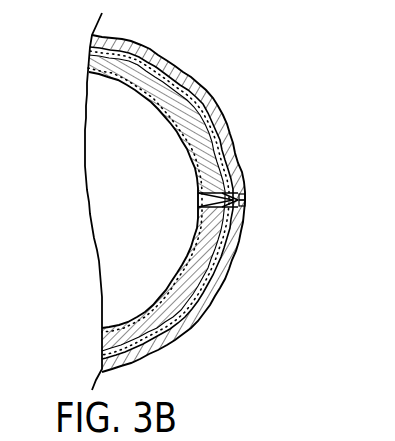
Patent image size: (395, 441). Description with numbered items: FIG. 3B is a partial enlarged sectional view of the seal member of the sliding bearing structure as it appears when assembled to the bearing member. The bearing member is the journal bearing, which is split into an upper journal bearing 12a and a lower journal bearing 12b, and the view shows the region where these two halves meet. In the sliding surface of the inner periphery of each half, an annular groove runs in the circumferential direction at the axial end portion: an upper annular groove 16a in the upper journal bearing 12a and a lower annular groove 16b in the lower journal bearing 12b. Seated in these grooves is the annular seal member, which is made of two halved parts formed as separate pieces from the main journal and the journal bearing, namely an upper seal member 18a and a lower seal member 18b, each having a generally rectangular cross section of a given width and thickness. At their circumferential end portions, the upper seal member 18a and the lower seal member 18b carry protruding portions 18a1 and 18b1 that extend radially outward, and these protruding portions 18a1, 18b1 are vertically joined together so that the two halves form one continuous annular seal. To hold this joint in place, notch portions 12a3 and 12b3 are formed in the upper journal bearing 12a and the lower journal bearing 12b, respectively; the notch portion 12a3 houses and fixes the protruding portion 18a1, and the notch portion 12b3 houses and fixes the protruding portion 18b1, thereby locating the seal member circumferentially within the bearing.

The upper journal bearing 12a is at (218, 124).
The lower journal bearing 12b is at (218, 273).
The notch portion 12a3 is at (200, 192).
The notch portion 12b3 is at (200, 208).
The upper annular groove 16a is at (148, 65).
The lower annular groove 16b is at (178, 300).
The upper seal member 18a is at (163, 135).
The lower seal member 18b is at (166, 253).
The protruding portion 18a1 is at (230, 190).
The protruding portion 18b1 is at (230, 210).